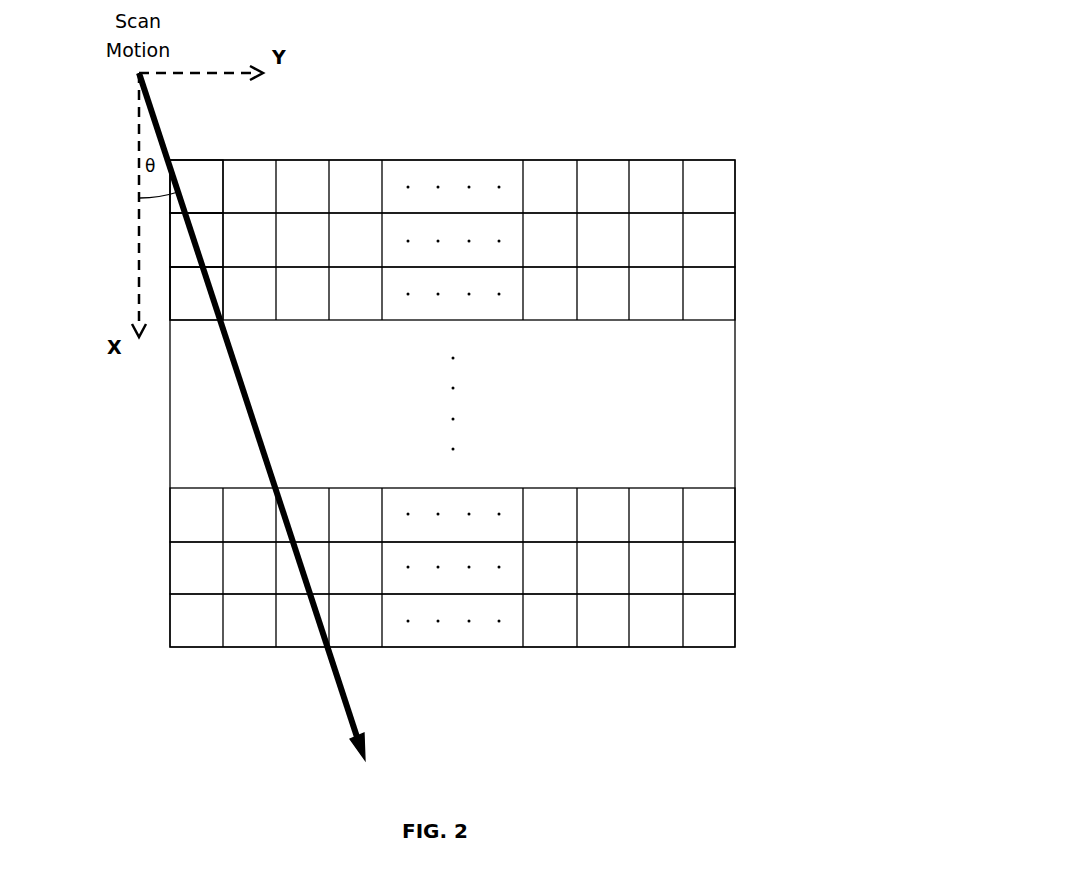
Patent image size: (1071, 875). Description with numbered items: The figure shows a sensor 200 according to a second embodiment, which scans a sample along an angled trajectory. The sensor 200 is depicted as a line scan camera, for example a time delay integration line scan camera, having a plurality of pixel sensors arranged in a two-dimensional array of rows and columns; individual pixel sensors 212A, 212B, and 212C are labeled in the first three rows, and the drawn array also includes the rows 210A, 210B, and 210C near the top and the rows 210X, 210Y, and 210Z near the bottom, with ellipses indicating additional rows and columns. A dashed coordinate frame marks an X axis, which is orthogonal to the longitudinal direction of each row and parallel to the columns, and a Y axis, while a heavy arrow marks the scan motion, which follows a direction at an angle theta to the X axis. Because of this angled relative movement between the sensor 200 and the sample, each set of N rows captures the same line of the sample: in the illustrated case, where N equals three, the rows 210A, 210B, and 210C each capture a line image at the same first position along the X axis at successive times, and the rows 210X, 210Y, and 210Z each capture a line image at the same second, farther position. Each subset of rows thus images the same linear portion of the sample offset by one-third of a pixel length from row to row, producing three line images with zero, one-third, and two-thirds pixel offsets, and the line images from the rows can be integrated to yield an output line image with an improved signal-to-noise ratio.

The sensor 200 is at (735, 143).
The row of pixel sensors 210A is at (753, 187).
The row of pixel sensors 210B is at (753, 241).
The row of pixel sensors 210C is at (753, 294).
The row of pixel sensors 210X is at (753, 513).
The row of pixel sensors 210Y is at (753, 568).
The row of pixel sensors 210Z is at (753, 621).
The pixel sensor 212A is at (215, 193).
The pixel sensor 212B is at (213, 248).
The pixel sensor 212C is at (188, 300).